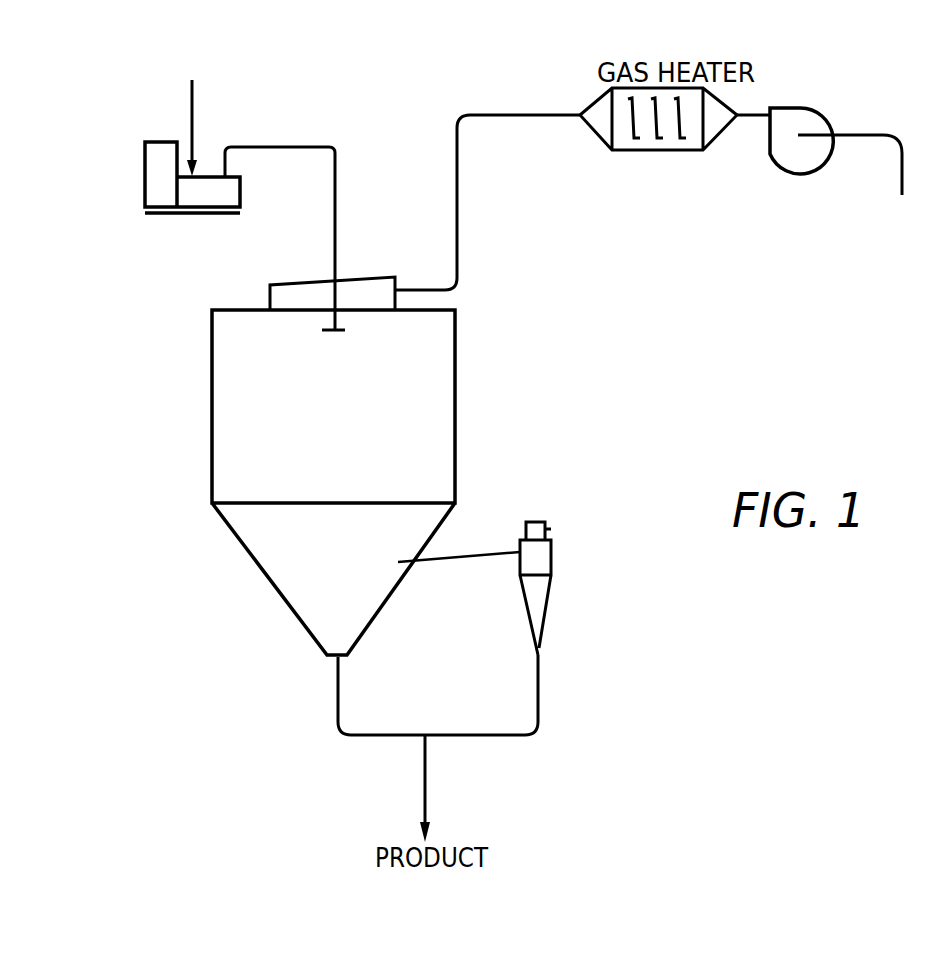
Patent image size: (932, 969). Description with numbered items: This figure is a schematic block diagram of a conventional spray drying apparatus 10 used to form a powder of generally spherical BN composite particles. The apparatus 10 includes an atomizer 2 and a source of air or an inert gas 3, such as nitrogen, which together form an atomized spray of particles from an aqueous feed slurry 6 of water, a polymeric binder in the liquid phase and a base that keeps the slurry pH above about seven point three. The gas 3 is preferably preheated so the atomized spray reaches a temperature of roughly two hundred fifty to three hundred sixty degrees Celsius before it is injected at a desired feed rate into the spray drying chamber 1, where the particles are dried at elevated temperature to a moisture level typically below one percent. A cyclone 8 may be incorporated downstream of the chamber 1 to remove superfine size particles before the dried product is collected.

The spray drying apparatus 10 is at (96, 328).
The spray drying chamber 1 is at (339, 407).
The atomizer 2 is at (343, 329).
The source of air or inert gas 3 is at (377, 288).
The aqueous feed slurry 6 is at (240, 187).
The cyclone 8 is at (528, 606).